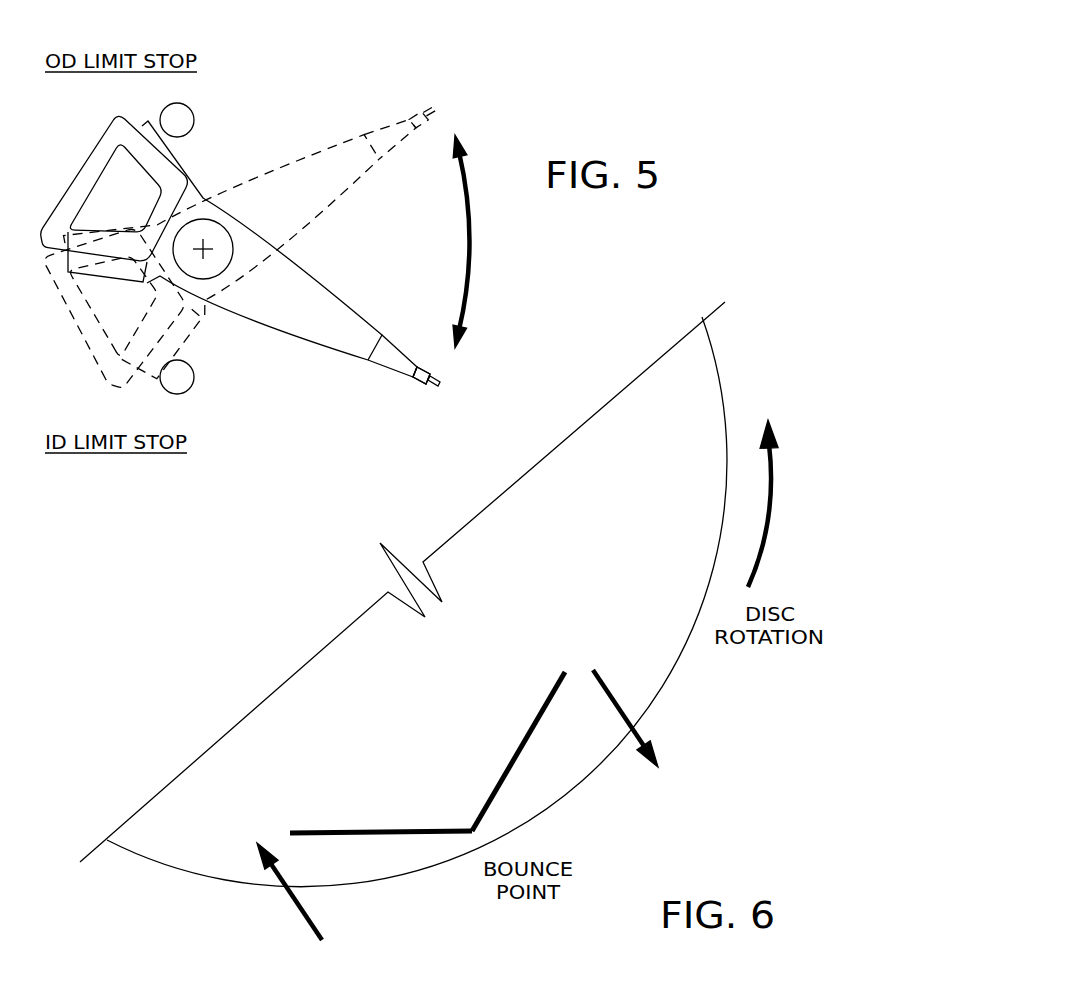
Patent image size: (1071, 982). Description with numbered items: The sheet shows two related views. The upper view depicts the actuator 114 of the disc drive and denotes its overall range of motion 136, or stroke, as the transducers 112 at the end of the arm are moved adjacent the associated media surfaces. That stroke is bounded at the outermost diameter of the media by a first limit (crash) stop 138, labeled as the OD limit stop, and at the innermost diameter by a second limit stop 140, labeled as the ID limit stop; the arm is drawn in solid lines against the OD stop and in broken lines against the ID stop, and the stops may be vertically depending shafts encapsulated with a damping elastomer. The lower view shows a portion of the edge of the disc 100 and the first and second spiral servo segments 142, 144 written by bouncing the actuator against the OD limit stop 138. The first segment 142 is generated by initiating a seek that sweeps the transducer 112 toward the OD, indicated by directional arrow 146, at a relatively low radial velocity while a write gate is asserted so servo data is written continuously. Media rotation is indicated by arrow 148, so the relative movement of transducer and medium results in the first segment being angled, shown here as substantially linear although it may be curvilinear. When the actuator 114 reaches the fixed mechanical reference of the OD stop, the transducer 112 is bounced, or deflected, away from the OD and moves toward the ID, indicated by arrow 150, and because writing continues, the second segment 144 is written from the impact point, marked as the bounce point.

In FIG. 6, the disc 100 is at (305, 702).
In FIG. 5, the transducer 112 is at (417, 377).
In FIG. 5, the actuator 114 is at (309, 284).
In FIG. 5, the range of motion 136 is at (469, 258).
In FIG. 5, the first limit stop 138 is at (182, 118).
In FIG. 5, the second limit stop 140 is at (185, 377).
In FIG. 6, the first spiral servo segment 142 is at (512, 753).
In FIG. 6, the second spiral servo segment 144 is at (413, 827).
In FIG. 6, the directional arrow 146 is at (607, 685).
In FIG. 6, the arrow 148 is at (768, 513).
In FIG. 6, the arrow 150 is at (288, 900).